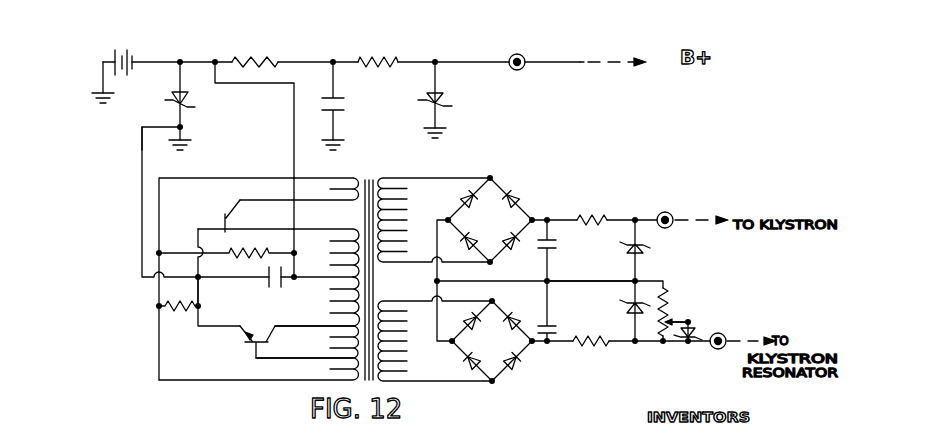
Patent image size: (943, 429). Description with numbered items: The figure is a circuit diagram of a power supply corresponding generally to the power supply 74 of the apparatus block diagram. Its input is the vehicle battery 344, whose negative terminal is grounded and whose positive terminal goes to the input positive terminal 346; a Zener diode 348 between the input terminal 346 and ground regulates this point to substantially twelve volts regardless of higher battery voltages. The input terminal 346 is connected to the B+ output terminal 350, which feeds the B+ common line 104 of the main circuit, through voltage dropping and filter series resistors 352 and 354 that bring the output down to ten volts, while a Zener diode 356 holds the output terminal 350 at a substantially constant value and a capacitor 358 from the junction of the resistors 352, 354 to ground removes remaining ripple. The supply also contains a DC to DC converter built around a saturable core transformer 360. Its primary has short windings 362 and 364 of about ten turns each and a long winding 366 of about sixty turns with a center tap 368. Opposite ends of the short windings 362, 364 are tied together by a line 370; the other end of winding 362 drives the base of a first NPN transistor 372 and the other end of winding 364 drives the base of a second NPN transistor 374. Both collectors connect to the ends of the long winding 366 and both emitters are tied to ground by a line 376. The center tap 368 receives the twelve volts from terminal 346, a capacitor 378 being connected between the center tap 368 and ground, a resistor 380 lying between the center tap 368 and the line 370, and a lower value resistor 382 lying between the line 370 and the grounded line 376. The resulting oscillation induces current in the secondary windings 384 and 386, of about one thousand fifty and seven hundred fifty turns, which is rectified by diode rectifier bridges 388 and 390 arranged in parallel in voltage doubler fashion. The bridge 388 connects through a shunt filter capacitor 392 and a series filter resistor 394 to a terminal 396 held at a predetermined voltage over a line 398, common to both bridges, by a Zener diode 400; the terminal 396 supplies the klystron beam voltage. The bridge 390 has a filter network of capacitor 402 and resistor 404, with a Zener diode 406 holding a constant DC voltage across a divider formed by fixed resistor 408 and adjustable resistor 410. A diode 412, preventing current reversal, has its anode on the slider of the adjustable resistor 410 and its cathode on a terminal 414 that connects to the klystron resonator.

The power supply 74 is at (470, 155).
The B+ common line 104 is at (571, 62).
The battery 344 is at (136, 55).
The input positive terminal 346 is at (185, 61).
The Zener diode 348 is at (195, 103).
The B+ output terminal 350 is at (519, 55).
The voltage dropping and filter series resistor 352 is at (258, 59).
The voltage dropping and filter series resistor 354 is at (398, 46).
The Zener diode 356 is at (447, 98).
The capacitor 358 is at (343, 102).
The saturable core transformer 360 is at (372, 176).
The short primary winding 362 is at (326, 178).
The short primary winding 364 is at (261, 353).
The long winding 366 is at (326, 242).
The center tap 368 is at (318, 282).
The line 370 is at (156, 306).
The first NPN transistor 372 is at (227, 216).
The second NPN transistor 374 is at (268, 342).
The line 376 is at (198, 288).
The capacitor 378 is at (278, 288).
The resistor 380 is at (271, 252).
The resistor 382 is at (178, 312).
The secondary winding 384 is at (390, 180).
The secondary winding 386 is at (396, 300).
The diode rectifier bridge 388 is at (505, 193).
The diode rectifier bridge 390 is at (494, 304).
The shunt filter capacitor 392 is at (557, 244).
The series filter resistor 394 is at (608, 220).
The terminal 396 is at (672, 216).
The line 398 is at (623, 279).
The Zener diode 400 is at (645, 249).
The capacitor 402 is at (552, 328).
The resistor 404 is at (592, 347).
The Zener diode 406 is at (633, 310).
The fixed resistor 408 is at (668, 297).
The adjustable resistor 410 is at (690, 322).
The diode 412 is at (700, 331).
The terminal 414 is at (726, 338).